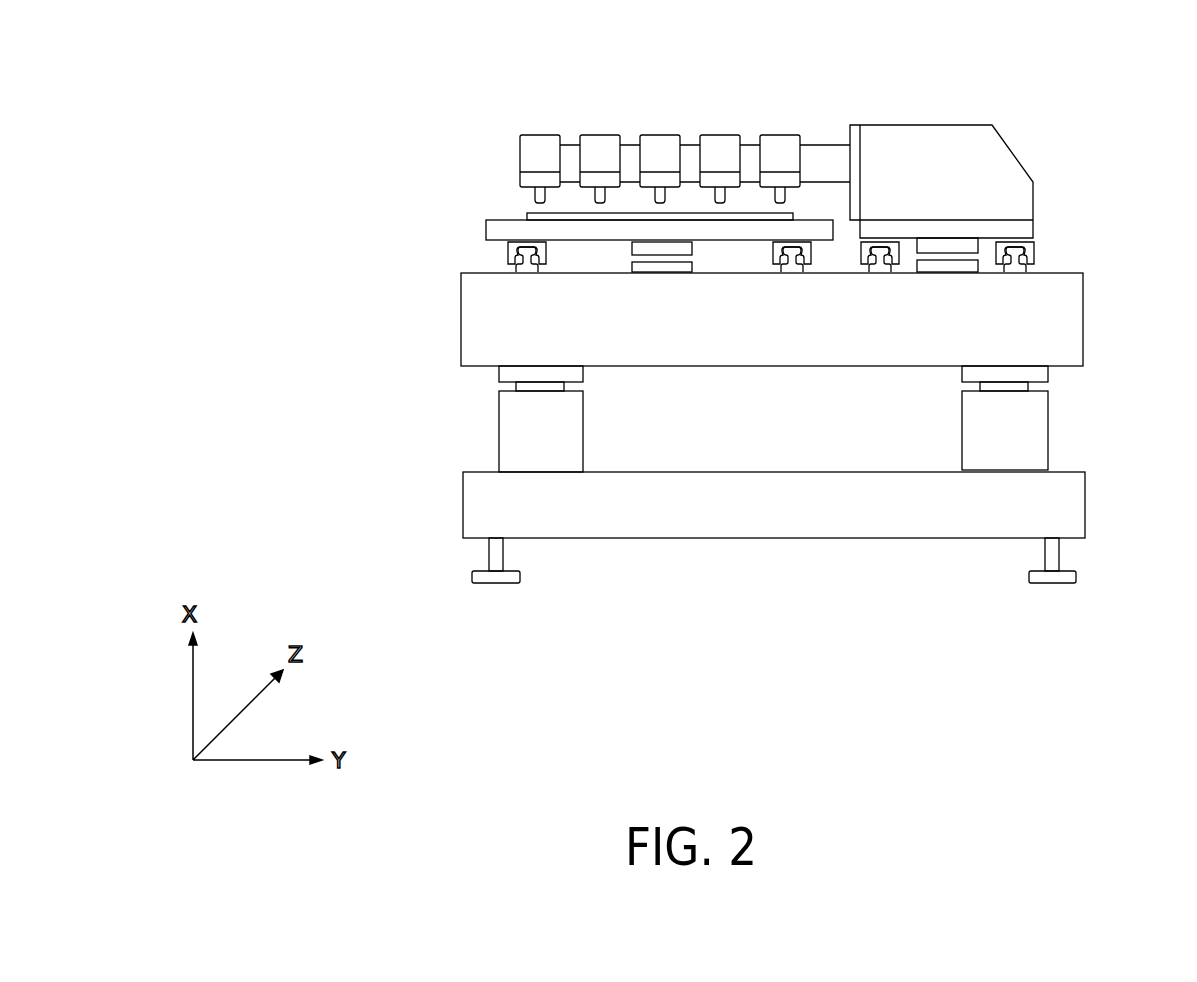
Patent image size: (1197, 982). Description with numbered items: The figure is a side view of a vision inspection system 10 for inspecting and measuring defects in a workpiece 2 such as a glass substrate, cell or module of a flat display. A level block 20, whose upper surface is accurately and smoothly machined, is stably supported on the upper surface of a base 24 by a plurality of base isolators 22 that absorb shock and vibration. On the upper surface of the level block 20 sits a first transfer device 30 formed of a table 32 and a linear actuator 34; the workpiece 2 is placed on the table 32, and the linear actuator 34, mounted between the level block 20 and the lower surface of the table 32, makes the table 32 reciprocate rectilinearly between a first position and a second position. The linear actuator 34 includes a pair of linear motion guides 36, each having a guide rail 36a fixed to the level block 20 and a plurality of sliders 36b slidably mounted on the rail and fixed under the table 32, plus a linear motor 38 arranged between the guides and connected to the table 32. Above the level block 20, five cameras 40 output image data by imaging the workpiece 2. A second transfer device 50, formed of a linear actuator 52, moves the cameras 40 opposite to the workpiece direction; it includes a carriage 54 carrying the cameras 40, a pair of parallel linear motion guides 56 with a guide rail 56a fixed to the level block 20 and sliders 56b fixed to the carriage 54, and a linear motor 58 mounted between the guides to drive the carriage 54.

The workpiece 2 is at (695, 217).
The vision inspection system 10 is at (314, 136).
The level block 20 is at (484, 327).
The base isolators 22 is at (520, 427).
The base 24 is at (486, 510).
The first transfer device 30 is at (503, 254).
The table 32 is at (633, 228).
The linear actuator 34 is at (705, 261).
The linear motion guides 36 is at (437, 138).
The guide rail 36a is at (528, 250).
The sliders 36b is at (532, 248).
The linear motor 38 is at (660, 250).
The cameras 40 is at (535, 150).
The second transfer device 50 is at (974, 118).
The linear actuator 52 is at (932, 118).
The carriage 54 is at (897, 145).
The linear motion guides 56 is at (1158, 203).
The guide rail 56a is at (1022, 267).
The sliders 56b is at (1030, 247).
The linear motor 58 is at (950, 245).